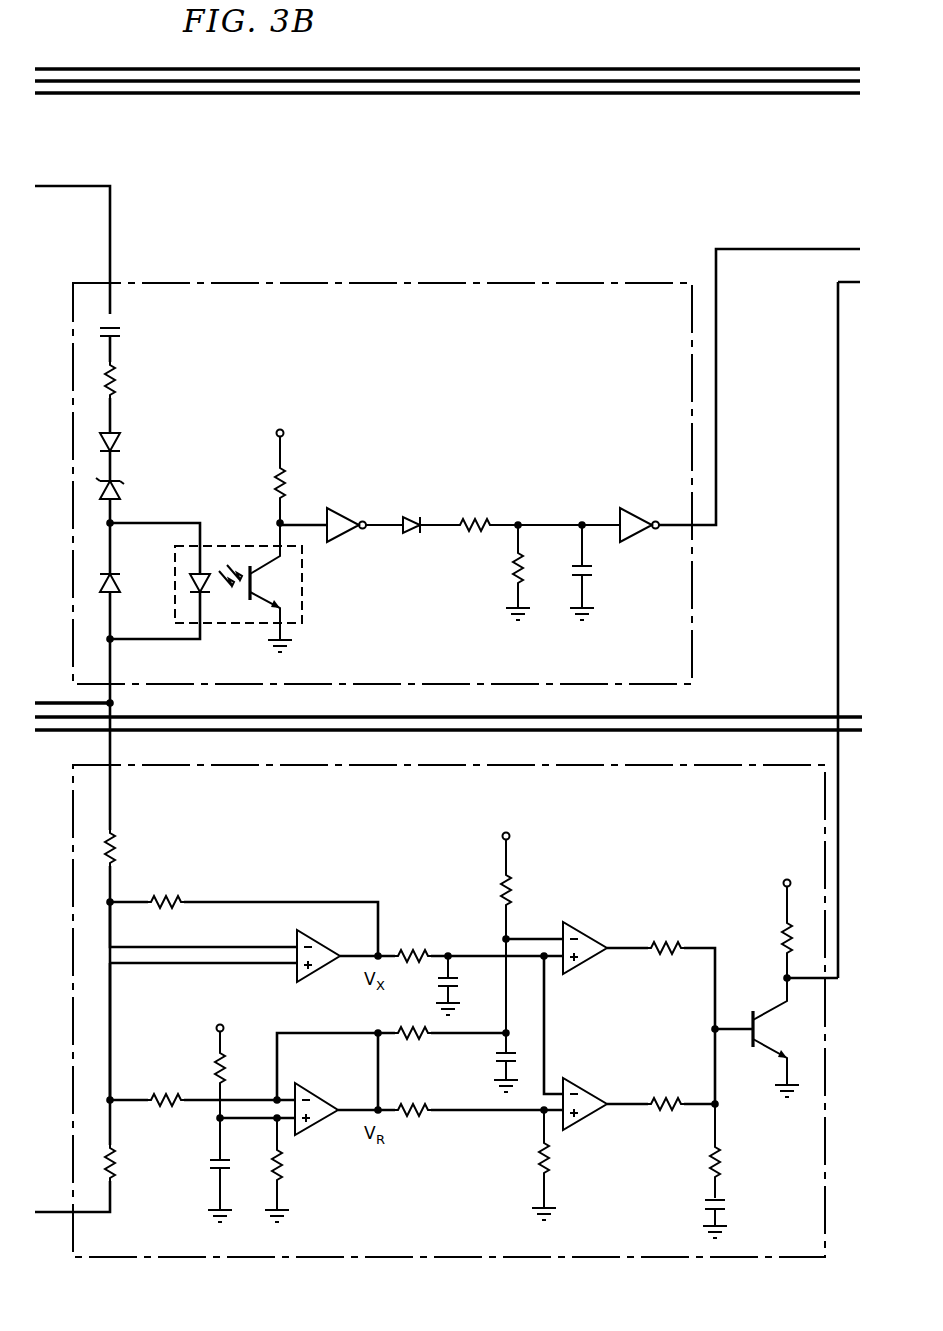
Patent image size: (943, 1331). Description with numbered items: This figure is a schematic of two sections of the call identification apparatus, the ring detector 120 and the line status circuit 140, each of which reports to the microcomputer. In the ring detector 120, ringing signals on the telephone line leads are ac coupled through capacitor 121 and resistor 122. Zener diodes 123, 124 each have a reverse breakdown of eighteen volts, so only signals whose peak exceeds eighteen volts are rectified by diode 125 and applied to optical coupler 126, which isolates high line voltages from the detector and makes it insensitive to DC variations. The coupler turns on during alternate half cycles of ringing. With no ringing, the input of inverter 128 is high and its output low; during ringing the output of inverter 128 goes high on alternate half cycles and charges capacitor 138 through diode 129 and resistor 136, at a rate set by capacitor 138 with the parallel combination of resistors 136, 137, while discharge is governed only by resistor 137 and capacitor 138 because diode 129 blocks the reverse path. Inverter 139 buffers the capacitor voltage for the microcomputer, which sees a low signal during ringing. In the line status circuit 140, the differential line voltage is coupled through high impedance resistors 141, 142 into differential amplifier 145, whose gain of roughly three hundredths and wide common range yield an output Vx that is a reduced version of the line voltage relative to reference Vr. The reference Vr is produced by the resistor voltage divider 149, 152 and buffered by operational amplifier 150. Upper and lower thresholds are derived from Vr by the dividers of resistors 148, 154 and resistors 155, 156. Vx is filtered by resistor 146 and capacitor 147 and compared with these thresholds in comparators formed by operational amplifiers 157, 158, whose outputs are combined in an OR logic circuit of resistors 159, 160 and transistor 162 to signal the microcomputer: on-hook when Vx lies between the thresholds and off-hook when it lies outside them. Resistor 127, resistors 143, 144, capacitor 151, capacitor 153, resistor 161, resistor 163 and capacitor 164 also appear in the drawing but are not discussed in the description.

The ring detector 120 is at (383, 286).
The capacitor 121 is at (129, 334).
The resistor 122 is at (132, 380).
The zener diode 123 is at (129, 443).
The zener diode 124 is at (127, 490).
The diode 125 is at (129, 585).
The optical coupler 126 is at (302, 585).
The resistor 127 is at (297, 465).
The inverter 128 is at (351, 516).
The diode 129 is at (411, 511).
The resistor 136 is at (474, 510).
The resistor 137 is at (534, 572).
The capacitor 138 is at (602, 572).
The inverter 139 is at (646, 516).
The line status circuit 140 is at (455, 767).
The resistor 141 is at (132, 848).
The resistor 142 is at (132, 1163).
The resistor 143 is at (166, 891).
The resistor 144 is at (166, 1089).
The differential amplifier 145 is at (326, 952).
The resistor 146 is at (413, 944).
The capacitor 147 is at (467, 985).
The resistor 148 is at (524, 920).
The resistor 149 is at (239, 1057).
The operational amplifier 150 is at (325, 1105).
The capacitor 151 is at (239, 1170).
The resistor 152 is at (294, 1170).
The capacitor 153 is at (485, 1062).
The resistor 154 is at (413, 1022).
The resistor 155 is at (413, 1098).
The resistor 156 is at (562, 1165).
The operational amplifier 157 is at (592, 944).
The operational amplifier 158 is at (592, 1099).
The resistor 159 is at (666, 935).
The resistor 160 is at (666, 1092).
The resistor 161 is at (771, 915).
The transistor 162 is at (782, 1037).
The resistor 163 is at (736, 1151).
The capacitor 164 is at (735, 1217).